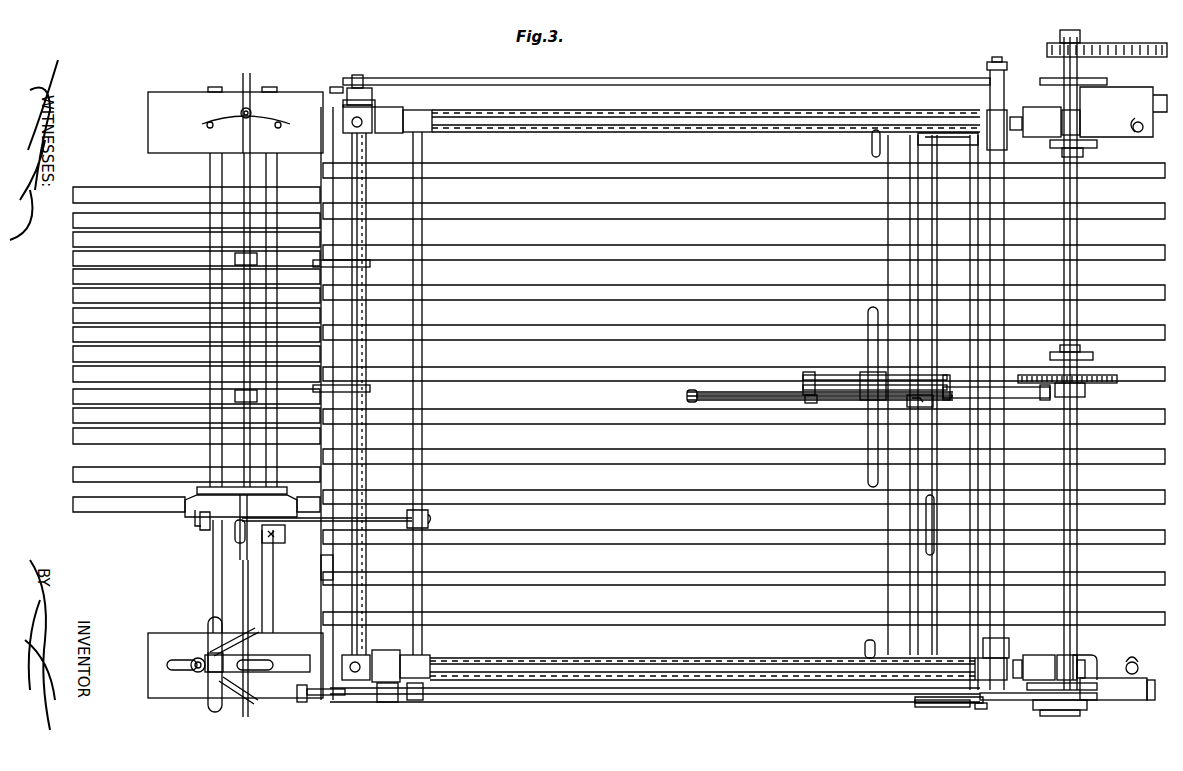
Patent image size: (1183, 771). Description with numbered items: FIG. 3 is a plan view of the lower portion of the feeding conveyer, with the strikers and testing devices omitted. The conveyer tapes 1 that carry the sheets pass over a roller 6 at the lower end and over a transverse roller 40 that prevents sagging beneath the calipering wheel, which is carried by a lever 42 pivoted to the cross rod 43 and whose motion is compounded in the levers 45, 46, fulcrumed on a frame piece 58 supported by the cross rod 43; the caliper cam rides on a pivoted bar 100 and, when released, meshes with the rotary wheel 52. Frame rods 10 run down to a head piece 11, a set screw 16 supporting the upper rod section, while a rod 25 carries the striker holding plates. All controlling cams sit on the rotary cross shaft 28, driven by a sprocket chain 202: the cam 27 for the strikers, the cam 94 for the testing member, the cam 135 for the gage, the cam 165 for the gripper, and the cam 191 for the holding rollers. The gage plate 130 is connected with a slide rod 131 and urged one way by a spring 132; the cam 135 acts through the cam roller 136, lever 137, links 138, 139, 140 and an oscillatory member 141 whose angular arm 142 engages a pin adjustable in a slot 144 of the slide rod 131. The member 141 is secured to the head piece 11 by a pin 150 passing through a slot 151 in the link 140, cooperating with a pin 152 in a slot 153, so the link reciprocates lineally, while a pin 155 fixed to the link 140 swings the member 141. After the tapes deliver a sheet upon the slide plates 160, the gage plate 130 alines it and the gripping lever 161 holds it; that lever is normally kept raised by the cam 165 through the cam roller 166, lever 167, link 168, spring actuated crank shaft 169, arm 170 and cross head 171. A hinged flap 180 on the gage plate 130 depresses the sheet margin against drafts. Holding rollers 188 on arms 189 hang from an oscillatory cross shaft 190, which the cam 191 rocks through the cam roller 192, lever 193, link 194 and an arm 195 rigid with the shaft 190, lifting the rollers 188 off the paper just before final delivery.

The conveyer tapes 1 is at (625, 216).
The roller 6 is at (330, 567).
The frame rods 10 is at (730, 135).
The head piece 11 is at (140, 688).
The set screw 16 is at (1142, 130).
The rod 25 is at (990, 96).
The cam 27 is at (1098, 147).
The rotary cross shaft 28 is at (1077, 480).
The transverse roller 40 is at (934, 521).
The lever 42 is at (762, 400).
The cross rod 43 is at (868, 434).
The lever 45 is at (719, 392).
The lever 46 is at (940, 407).
The rotary wheel 52 is at (1105, 384).
The frame piece 58 is at (835, 375).
The cam 94 is at (1094, 359).
The bar 100 is at (1002, 387).
The gage plate 130 is at (210, 490).
The slide rod 131 is at (238, 572).
The spring 132 is at (262, 123).
The cam 135 is at (1085, 675).
The cam roller 136 is at (1080, 690).
The lever 137 is at (1025, 700).
The link 138 is at (800, 690).
The link 139 is at (306, 702).
The link 140 is at (271, 657).
The oscillatory member 141 is at (210, 674).
The arm 142 is at (258, 632).
The slot 144 is at (248, 674).
The pin 150 is at (200, 658).
The slot 151 is at (167, 666).
The pin 152 is at (273, 665).
The slot 153 is at (246, 712).
The pin 155 is at (210, 699).
The slide plates 160 is at (72, 274).
The lever 161 is at (235, 538).
The cam 165 is at (1065, 710).
The cam roller 166 is at (1050, 712).
The lever 167 is at (992, 703).
The link 168 is at (595, 702).
The crank shaft 169 is at (422, 480).
The arm 170 is at (291, 526).
The cross head 171 is at (242, 546).
The flap 180 is at (210, 500).
The rollers 188 is at (236, 261).
The arms 189 is at (278, 376).
The oscillatory cross shaft 190 is at (365, 441).
The cam 191 is at (1104, 83).
The cam roller 192 is at (1048, 85).
The lever 193 is at (1028, 78).
The link 194 is at (702, 84).
The arm 195 is at (362, 90).
The sprocket chain 202 is at (1107, 38).